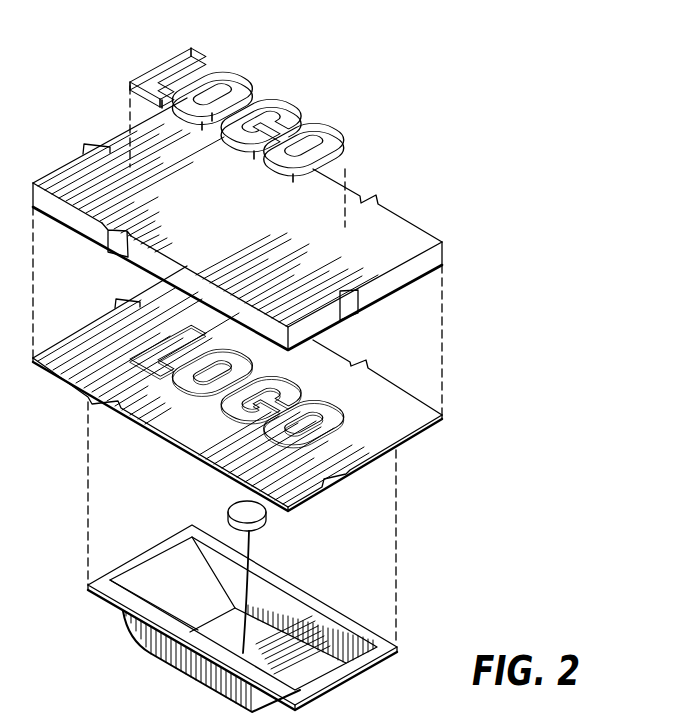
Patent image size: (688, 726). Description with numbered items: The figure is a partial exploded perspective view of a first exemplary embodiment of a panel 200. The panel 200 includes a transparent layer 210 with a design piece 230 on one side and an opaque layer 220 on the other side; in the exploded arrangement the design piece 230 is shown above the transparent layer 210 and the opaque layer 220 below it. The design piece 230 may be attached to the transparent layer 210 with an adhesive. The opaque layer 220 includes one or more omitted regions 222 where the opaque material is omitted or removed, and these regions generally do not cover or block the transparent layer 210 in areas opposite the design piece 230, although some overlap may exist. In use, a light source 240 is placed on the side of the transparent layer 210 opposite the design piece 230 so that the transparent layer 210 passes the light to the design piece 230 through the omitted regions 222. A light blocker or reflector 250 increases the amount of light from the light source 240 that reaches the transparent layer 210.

The panel 200 is at (65, 125).
The transparent layer 210 is at (387, 230).
The opaque layer 220 is at (365, 397).
The omitted regions 222 is at (347, 415).
The design piece 230 is at (327, 117).
The light source 240 is at (266, 531).
The light blocker or reflector 250 is at (355, 625).